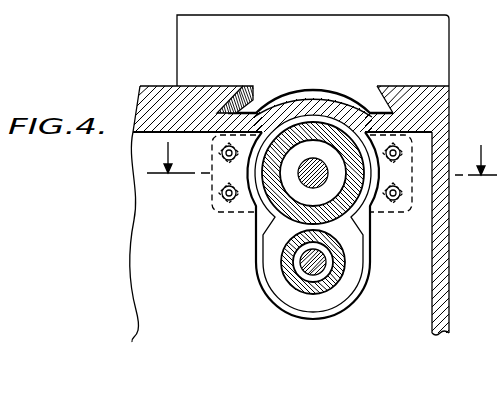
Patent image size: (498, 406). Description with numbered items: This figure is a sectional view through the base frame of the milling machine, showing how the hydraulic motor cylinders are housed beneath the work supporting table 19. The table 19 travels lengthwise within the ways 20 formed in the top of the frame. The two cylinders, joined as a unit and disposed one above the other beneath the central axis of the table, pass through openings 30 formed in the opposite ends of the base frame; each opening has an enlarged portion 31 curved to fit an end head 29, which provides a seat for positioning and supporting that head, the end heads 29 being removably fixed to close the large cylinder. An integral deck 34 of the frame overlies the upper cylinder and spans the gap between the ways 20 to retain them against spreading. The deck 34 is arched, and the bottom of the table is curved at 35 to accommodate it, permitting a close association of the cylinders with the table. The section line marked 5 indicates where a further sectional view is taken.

The work supporting table 19 is at (436, 44).
The ways 20 is at (254, 98).
The end heads 29 is at (246, 172).
The openings 30 is at (366, 226).
The enlarged portion 31 is at (252, 205).
The deck 34 is at (313, 101).
The curved bottom of the table 35 is at (298, 93).
The section line 5- 5 is at (322, 172).